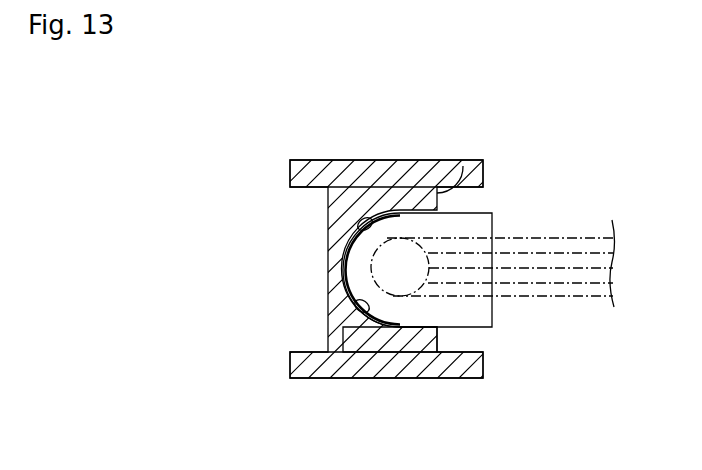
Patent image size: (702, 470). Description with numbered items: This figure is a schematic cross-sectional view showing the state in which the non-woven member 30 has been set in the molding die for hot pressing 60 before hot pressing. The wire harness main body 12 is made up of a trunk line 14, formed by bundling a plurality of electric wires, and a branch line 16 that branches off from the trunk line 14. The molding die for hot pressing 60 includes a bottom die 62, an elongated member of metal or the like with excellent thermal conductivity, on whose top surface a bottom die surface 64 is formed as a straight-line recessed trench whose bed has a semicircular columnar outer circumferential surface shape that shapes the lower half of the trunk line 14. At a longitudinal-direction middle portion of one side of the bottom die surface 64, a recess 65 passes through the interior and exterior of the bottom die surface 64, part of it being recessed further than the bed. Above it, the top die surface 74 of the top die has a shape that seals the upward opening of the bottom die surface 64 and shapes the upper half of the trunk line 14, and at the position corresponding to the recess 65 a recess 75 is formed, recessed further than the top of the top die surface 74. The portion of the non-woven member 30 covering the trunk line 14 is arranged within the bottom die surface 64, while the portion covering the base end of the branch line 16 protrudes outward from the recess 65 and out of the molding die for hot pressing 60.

The wire harness main body 12 is at (581, 229).
The trunk line 14 is at (343, 248).
The branch line 16 is at (600, 298).
The non-woven member 30 is at (398, 208).
The molding die for hot pressing 60 is at (303, 155).
The bottom die 62 is at (350, 382).
The bottom die surface 64 is at (354, 303).
The recess 65 is at (437, 333).
The top die surface 74 is at (358, 220).
The recess 75 is at (460, 172).